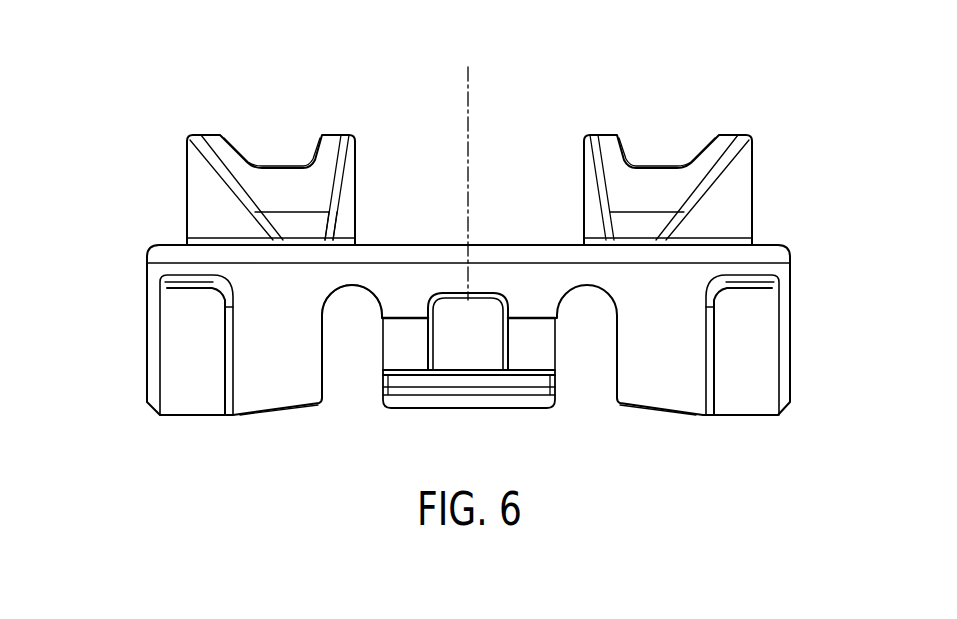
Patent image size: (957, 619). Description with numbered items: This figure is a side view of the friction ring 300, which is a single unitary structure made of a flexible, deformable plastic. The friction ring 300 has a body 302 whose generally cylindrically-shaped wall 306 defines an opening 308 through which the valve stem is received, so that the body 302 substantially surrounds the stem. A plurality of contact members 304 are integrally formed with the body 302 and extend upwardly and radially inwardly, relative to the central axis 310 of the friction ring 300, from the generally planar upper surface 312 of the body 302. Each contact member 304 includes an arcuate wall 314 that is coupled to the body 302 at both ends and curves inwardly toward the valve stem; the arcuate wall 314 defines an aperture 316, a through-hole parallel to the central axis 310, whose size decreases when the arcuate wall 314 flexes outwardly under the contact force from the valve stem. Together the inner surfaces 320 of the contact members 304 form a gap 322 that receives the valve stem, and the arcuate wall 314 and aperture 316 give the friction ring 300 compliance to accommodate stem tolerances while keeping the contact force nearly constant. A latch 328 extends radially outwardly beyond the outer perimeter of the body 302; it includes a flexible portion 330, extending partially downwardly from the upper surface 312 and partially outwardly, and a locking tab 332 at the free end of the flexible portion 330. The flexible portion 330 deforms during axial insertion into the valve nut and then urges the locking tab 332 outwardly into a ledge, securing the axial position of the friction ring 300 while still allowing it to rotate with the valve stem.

The friction ring 300 is at (152, 92).
The body 302 is at (787, 365).
The contact members 304 is at (210, 135).
The wall 306 is at (147, 275).
The opening 308 is at (355, 402).
The central axis 310 is at (470, 90).
The upper surface 312 is at (763, 245).
The arcuate wall 314 is at (352, 180).
The aperture 316 is at (637, 133).
The inner surface 320 is at (347, 228).
The gap 322 is at (507, 167).
The latch 328 is at (512, 418).
The flexible portion 330 is at (547, 358).
The locking tab 332 is at (405, 400).